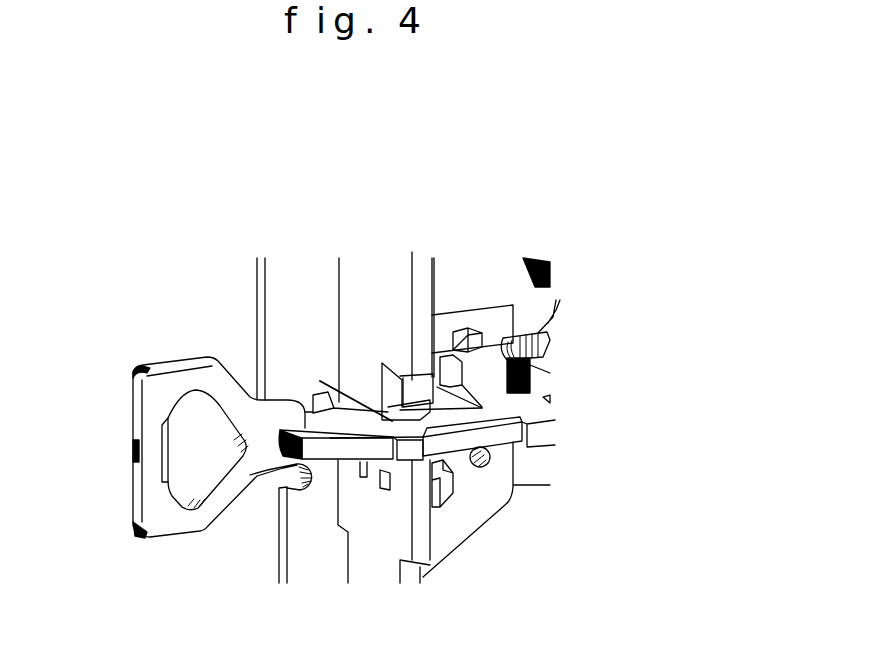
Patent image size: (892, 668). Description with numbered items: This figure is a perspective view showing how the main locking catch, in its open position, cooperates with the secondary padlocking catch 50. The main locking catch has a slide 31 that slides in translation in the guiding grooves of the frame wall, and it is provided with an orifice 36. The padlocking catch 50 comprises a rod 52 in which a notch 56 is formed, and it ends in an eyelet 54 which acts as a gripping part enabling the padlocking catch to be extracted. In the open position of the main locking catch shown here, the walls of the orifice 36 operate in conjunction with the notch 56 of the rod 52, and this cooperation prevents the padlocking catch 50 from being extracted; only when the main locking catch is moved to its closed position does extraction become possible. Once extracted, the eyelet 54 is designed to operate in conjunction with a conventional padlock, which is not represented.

The slide 31 is at (433, 258).
The orifice 36 is at (383, 373).
The secondary padlocking catch 50 is at (132, 352).
The rod 52 is at (480, 420).
The eyelet 54 is at (173, 538).
The notch 56 is at (390, 420).